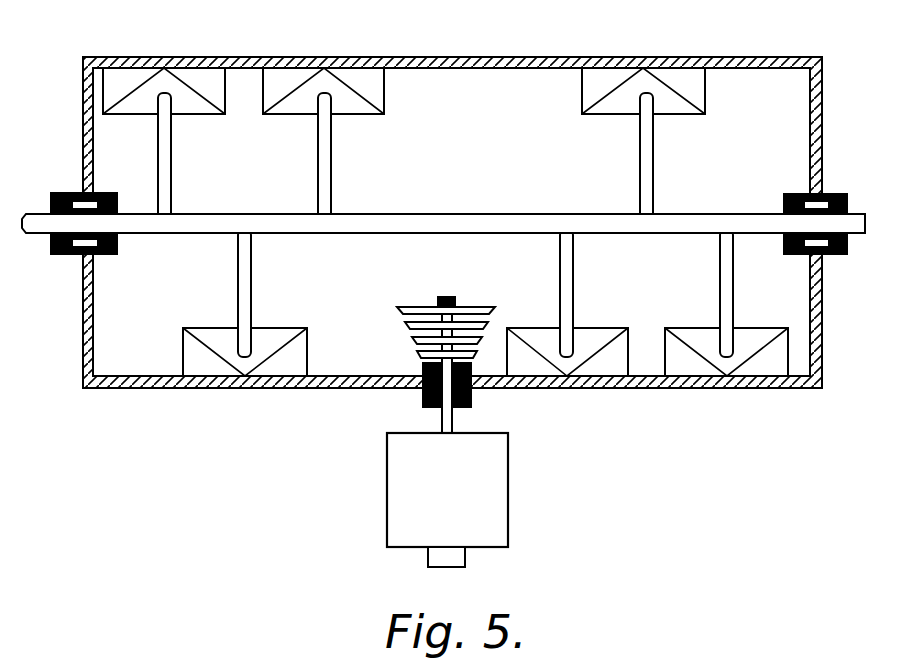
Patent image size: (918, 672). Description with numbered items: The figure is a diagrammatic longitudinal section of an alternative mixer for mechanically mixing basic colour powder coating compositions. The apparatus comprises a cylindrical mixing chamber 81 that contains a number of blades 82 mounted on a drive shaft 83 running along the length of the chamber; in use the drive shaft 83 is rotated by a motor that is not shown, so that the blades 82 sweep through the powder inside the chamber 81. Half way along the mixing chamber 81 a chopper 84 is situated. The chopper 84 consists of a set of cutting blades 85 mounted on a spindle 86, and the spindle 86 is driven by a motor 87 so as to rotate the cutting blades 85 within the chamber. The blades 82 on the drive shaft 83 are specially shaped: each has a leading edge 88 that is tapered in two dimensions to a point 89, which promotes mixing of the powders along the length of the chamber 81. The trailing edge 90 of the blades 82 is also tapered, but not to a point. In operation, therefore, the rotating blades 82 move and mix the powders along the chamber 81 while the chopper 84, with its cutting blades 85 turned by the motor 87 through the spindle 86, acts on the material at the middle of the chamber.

The mixing chamber 81 is at (512, 65).
The blades 82 is at (358, 82).
The drive shaft 83 is at (698, 222).
The chopper 84 is at (396, 337).
The cutting blades 85 is at (410, 307).
The spindle 86 is at (453, 418).
The motor 87 is at (497, 495).
The leading edge 88 is at (183, 106).
The point 89 is at (162, 78).
The trailing edge 90 is at (720, 354).